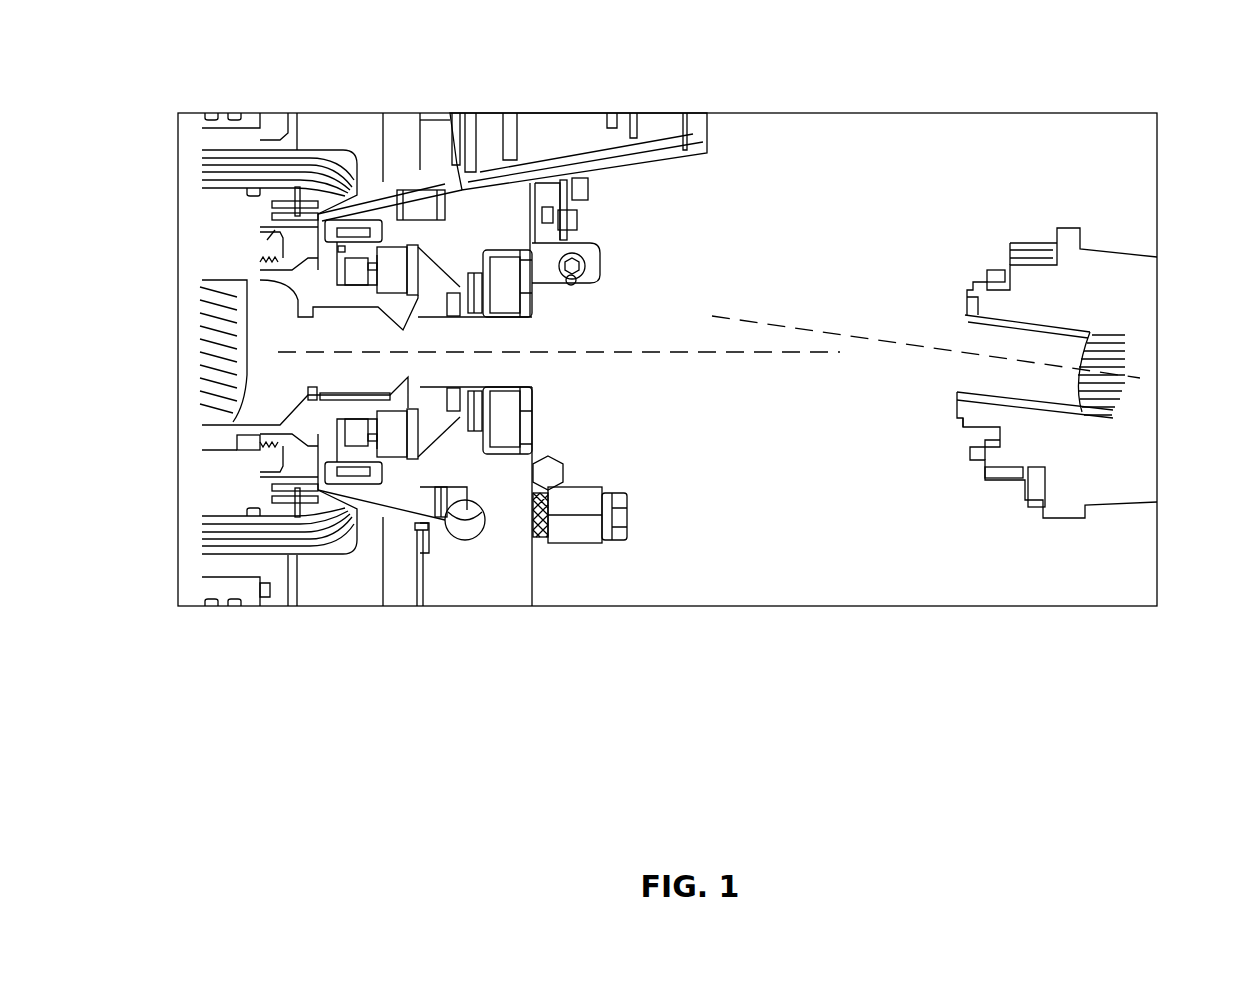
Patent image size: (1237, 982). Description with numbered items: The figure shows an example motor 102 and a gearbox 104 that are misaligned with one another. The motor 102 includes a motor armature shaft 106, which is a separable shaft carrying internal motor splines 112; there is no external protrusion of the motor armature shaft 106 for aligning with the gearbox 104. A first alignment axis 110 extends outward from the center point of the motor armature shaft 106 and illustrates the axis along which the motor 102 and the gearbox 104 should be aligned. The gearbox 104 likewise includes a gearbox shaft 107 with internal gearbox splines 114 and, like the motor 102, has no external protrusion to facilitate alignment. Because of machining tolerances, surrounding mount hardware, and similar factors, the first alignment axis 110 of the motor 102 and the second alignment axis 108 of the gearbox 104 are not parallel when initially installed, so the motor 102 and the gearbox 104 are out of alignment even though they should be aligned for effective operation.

The motor 102 is at (365, 62).
The gearbox 104 is at (1067, 172).
The motor armature shaft 106 is at (412, 308).
The gearbox shaft 107 is at (966, 313).
The second alignment axis 108 is at (782, 322).
The first alignment axis 110 is at (653, 353).
The internal motor splines 112 is at (247, 350).
The internal gearbox splines 114 is at (1090, 332).